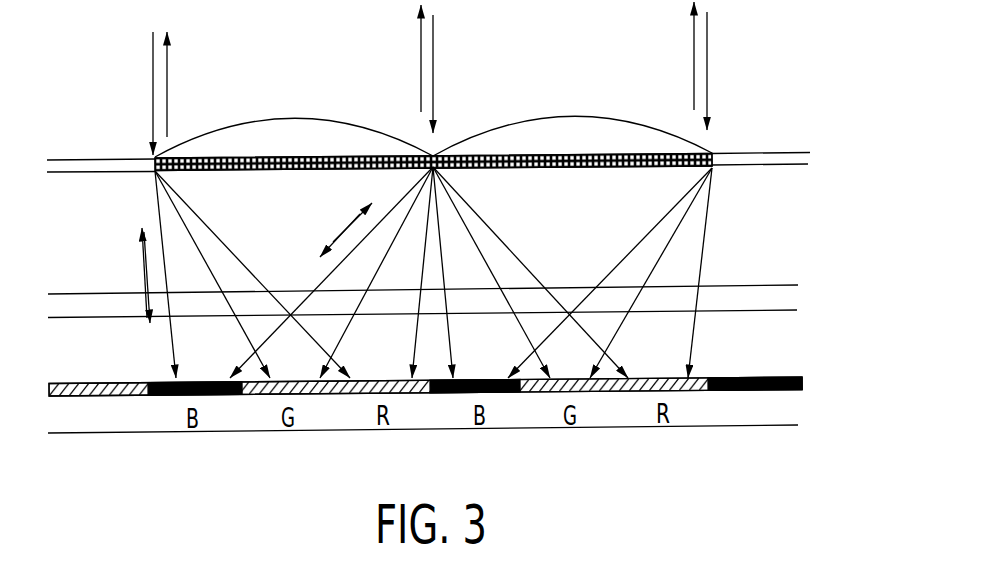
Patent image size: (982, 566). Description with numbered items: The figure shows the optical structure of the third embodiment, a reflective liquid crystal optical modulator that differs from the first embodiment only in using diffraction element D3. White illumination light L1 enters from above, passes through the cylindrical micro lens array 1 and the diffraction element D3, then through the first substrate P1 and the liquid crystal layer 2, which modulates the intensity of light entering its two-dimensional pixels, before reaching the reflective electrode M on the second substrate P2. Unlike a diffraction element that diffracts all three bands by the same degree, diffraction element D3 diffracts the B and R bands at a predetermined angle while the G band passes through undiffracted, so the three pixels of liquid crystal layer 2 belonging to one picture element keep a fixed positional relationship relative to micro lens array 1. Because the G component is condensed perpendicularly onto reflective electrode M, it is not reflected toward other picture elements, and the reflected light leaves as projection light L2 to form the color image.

The micro lens 1 is at (249, 136).
The liquid crystal layer 2 is at (765, 350).
The diffraction element D3 is at (808, 156).
The illumination light L1 is at (152, 58).
The projection light L2 is at (167, 97).
The reflective electrode M is at (805, 384).
The first substrate P1 is at (795, 303).
The second substrate P2 is at (775, 415).